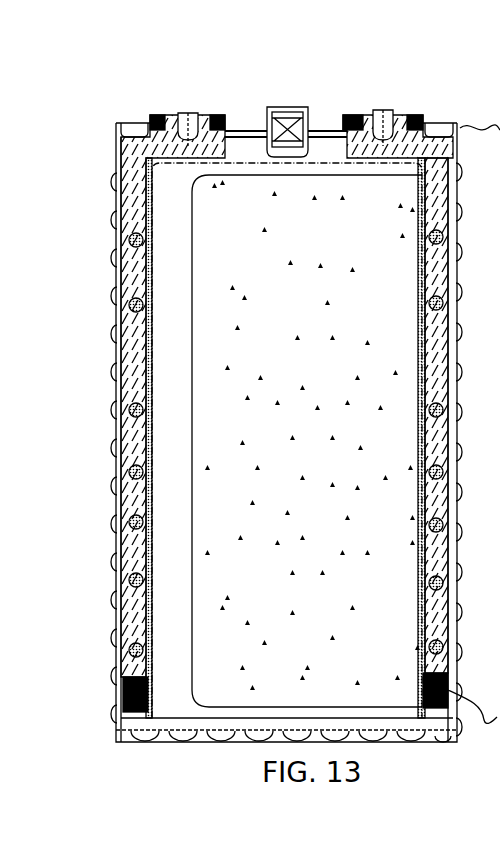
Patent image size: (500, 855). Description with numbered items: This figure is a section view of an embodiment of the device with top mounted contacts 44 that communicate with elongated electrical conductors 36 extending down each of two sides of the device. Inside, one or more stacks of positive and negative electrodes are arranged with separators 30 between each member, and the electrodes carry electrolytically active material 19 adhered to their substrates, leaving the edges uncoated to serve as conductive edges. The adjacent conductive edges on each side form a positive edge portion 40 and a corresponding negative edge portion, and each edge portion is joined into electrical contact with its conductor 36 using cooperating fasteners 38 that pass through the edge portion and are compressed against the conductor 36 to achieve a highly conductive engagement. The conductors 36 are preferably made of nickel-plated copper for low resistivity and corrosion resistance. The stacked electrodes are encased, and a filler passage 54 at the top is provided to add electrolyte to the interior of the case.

The electrolytically active material 19 is at (390, 583).
The separators 30 is at (170, 372).
The elongated electrical conductor 36 is at (142, 262).
The cooperating fasteners 38 is at (122, 424).
The positive edge portion 40 is at (118, 697).
The top mounted contacts 44 is at (188, 110).
The filler passage 54 is at (289, 100).